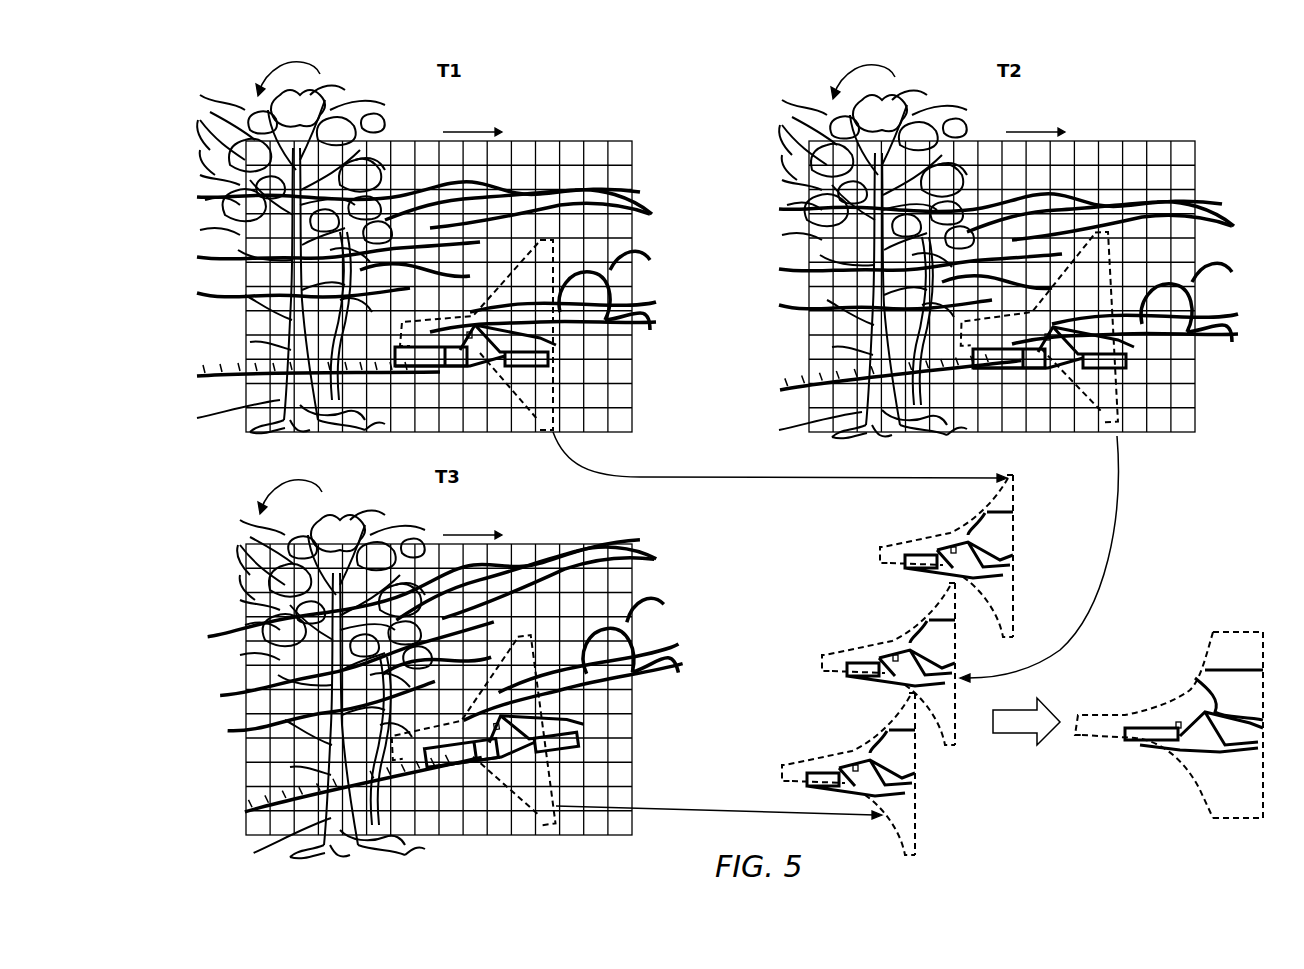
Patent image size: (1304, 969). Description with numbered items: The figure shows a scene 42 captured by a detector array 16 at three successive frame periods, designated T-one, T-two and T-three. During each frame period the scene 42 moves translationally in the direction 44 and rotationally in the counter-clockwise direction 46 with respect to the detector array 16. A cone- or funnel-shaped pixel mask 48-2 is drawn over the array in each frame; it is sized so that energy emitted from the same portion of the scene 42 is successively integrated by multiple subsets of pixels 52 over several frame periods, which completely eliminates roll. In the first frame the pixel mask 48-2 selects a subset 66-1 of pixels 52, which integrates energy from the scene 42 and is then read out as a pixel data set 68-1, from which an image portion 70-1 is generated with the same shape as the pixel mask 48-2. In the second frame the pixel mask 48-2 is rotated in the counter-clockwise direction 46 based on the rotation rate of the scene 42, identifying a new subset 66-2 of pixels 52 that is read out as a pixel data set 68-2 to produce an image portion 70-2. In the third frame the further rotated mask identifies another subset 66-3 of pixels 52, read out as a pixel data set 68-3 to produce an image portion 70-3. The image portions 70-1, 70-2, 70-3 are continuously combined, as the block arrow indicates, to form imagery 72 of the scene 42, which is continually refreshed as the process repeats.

The detector array 16 is at (622, 141).
The scene 42 is at (215, 122).
The direction 44 is at (467, 131).
The counter-clockwise direction 46 is at (320, 74).
The pixel mask 48-2 is at (528, 388).
The pixels 52 is at (378, 422).
The subset of pixels 66-1 is at (545, 259).
The subset of pixels 66-2 is at (1095, 261).
The subset of pixels 66-3 is at (521, 660).
The pixel data set 68-1 is at (735, 477).
The pixel data set 68-2 is at (1114, 522).
The pixel data set 68-3 is at (724, 810).
The image portion 70-1 is at (937, 540).
The image portion 70-2 is at (880, 646).
The image portion 70-3 is at (853, 758).
The imagery 72 is at (1256, 630).